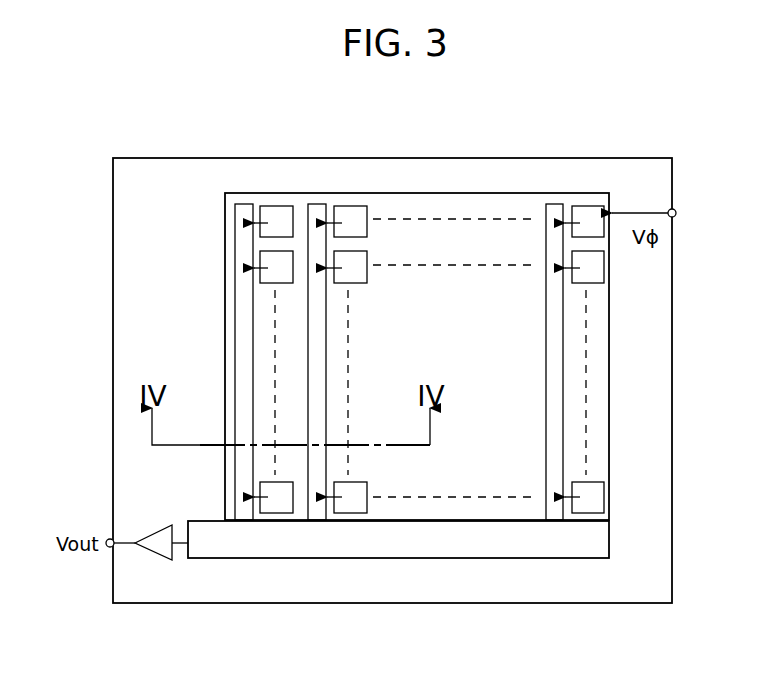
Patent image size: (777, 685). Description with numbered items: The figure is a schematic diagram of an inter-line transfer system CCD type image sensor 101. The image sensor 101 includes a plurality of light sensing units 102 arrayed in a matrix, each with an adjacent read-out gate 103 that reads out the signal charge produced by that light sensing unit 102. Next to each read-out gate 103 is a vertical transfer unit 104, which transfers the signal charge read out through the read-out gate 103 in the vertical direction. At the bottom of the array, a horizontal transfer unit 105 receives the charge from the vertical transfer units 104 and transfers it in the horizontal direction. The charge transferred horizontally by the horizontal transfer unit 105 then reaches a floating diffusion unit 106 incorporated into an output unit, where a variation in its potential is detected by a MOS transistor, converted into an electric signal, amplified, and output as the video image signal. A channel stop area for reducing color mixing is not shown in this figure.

The CCD type image sensor 101 is at (142, 160).
The light sensing unit 102 is at (270, 208).
The read-out gate 103 is at (330, 222).
The vertical transfer unit 104 is at (553, 204).
The horizontal transfer unit 105 is at (231, 550).
The floating diffusion (FD) unit 106 is at (167, 548).